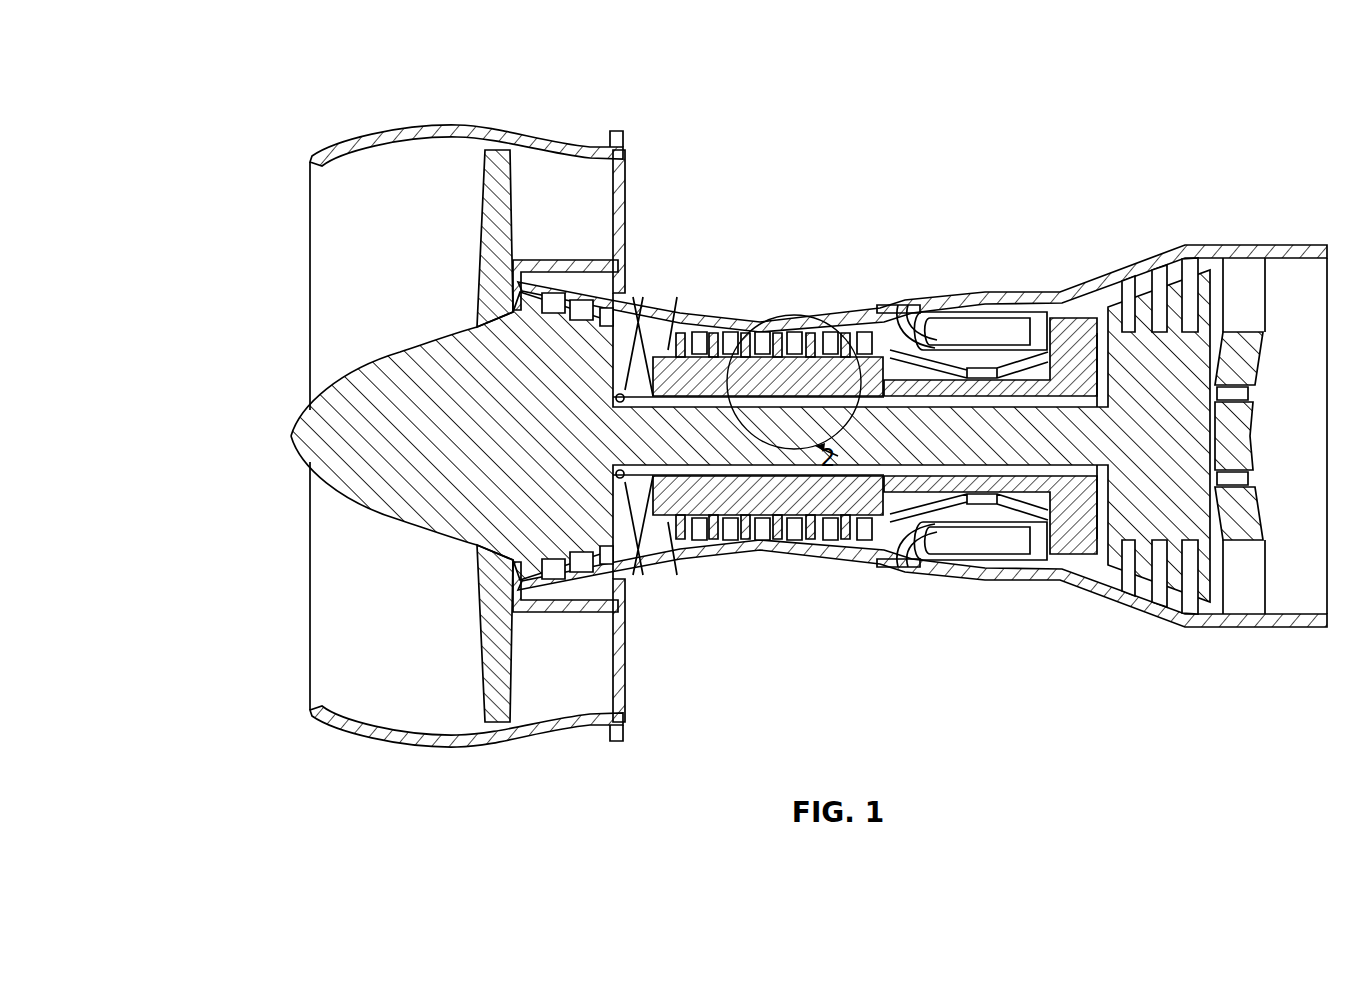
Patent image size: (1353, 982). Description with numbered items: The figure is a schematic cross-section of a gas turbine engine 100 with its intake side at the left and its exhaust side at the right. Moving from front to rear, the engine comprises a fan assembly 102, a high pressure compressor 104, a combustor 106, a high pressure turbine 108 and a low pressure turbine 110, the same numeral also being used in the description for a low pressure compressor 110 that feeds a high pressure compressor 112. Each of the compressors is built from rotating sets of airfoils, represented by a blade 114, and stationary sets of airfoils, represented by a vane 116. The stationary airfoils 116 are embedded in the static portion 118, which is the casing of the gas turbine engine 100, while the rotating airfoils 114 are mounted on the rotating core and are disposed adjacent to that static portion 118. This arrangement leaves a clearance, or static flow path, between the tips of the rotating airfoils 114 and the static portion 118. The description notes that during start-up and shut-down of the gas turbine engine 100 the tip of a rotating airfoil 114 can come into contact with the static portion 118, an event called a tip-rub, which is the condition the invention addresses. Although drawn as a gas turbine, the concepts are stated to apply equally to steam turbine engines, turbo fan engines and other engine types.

The gas turbine engine 100 is at (255, 112).
The fan assembly 102 is at (482, 256).
The high pressure compressor 104 is at (895, 293).
The combustor 106 is at (1042, 283).
The high pressure turbine 108 is at (1046, 110).
The low pressure turbine 110 is at (590, 254).
The high pressure compressor 112 is at (814, 300).
The blade 114 is at (745, 332).
The vane 116 is at (735, 405).
The static portion 118 is at (833, 335).